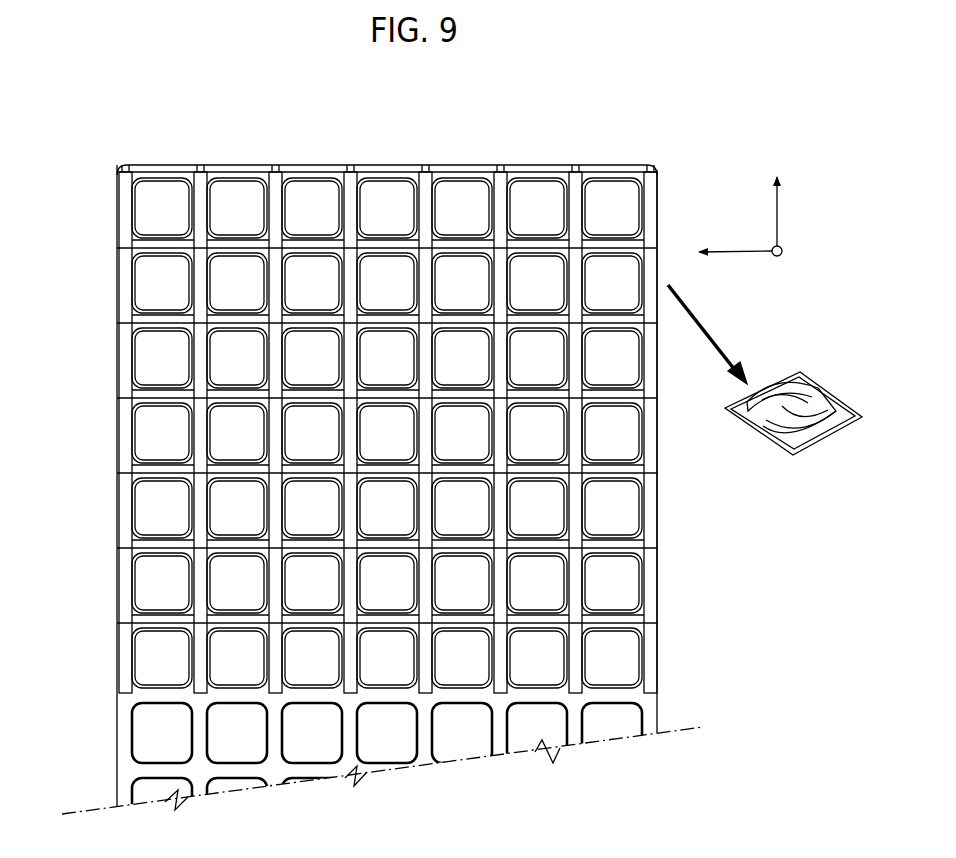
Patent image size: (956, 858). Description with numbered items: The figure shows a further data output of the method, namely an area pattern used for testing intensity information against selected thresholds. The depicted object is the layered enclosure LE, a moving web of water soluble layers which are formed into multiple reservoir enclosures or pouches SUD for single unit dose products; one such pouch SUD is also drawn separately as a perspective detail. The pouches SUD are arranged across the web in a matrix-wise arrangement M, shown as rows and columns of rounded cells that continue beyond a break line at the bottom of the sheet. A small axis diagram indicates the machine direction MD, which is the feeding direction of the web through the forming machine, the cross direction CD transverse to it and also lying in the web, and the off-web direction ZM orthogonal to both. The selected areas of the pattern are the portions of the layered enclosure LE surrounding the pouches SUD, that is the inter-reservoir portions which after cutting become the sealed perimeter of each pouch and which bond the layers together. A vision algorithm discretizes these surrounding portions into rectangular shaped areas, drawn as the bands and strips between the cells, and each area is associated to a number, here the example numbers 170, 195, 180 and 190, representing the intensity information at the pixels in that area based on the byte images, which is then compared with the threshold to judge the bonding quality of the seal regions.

The matrix-wise arrangement M is at (101, 741).
The layered enclosure LE is at (215, 148).
The intensity information number 170 is at (340, 168).
The intensity information number 195 is at (380, 167).
The intensity information number 180 is at (390, 245).
The intensity information number 190 is at (423, 215).
The reservoir enclosure SUD is at (608, 208).
The machine direction MD is at (784, 196).
The cross direction CD is at (731, 235).
The off-web direction ZM is at (782, 257).